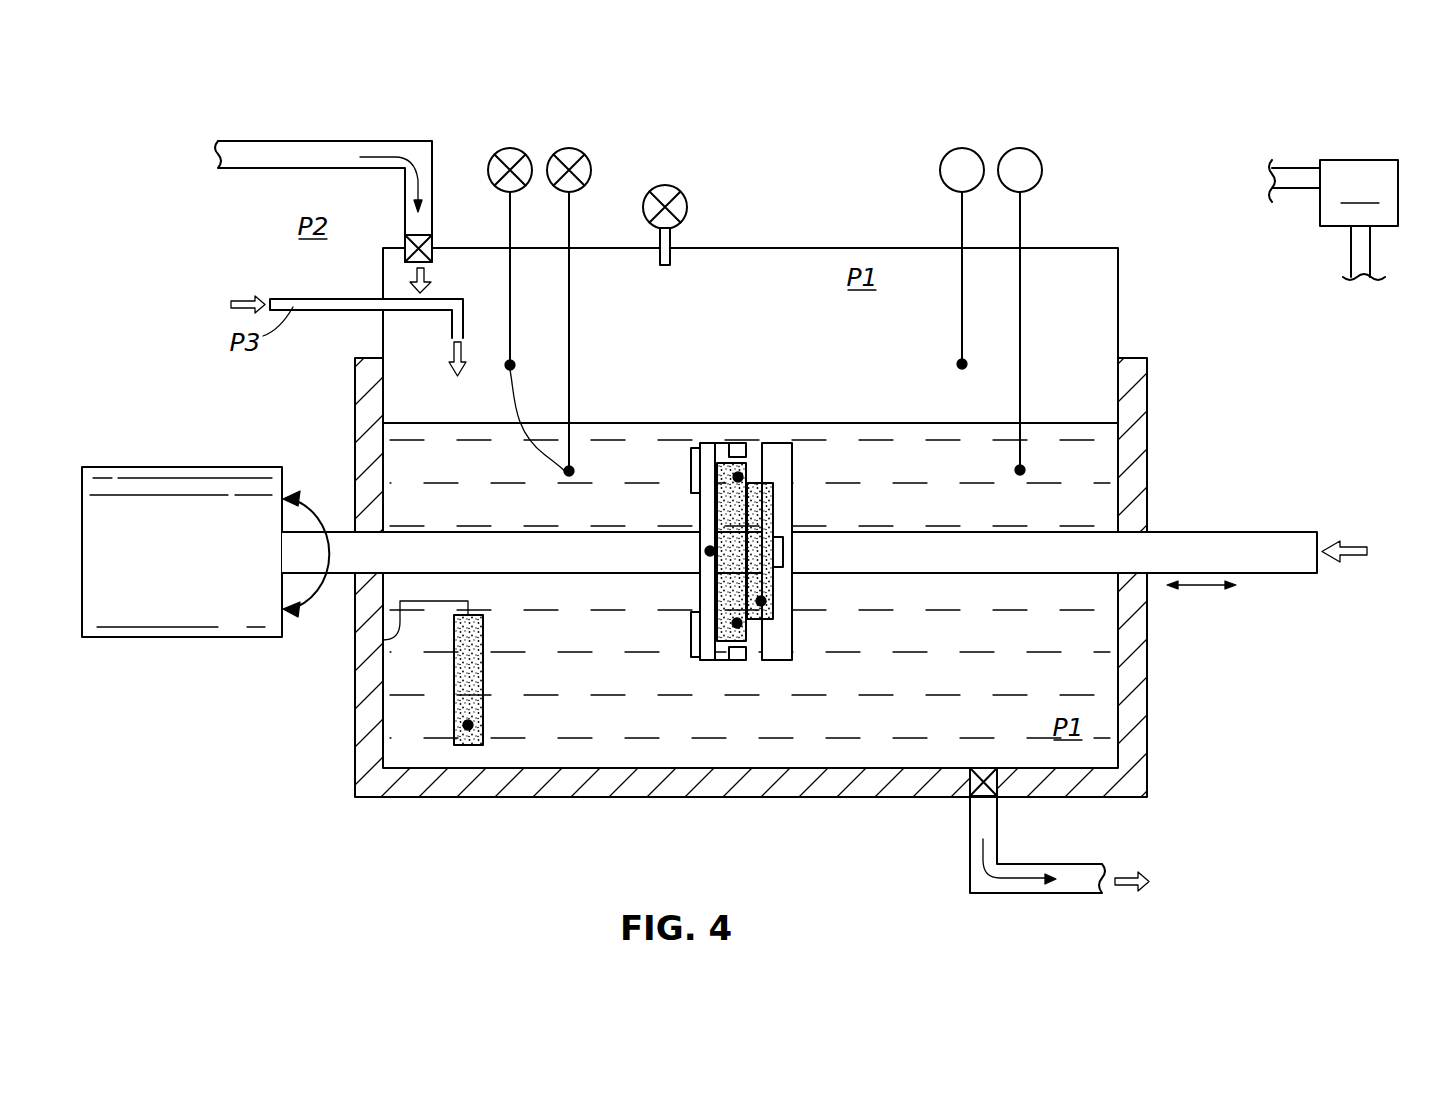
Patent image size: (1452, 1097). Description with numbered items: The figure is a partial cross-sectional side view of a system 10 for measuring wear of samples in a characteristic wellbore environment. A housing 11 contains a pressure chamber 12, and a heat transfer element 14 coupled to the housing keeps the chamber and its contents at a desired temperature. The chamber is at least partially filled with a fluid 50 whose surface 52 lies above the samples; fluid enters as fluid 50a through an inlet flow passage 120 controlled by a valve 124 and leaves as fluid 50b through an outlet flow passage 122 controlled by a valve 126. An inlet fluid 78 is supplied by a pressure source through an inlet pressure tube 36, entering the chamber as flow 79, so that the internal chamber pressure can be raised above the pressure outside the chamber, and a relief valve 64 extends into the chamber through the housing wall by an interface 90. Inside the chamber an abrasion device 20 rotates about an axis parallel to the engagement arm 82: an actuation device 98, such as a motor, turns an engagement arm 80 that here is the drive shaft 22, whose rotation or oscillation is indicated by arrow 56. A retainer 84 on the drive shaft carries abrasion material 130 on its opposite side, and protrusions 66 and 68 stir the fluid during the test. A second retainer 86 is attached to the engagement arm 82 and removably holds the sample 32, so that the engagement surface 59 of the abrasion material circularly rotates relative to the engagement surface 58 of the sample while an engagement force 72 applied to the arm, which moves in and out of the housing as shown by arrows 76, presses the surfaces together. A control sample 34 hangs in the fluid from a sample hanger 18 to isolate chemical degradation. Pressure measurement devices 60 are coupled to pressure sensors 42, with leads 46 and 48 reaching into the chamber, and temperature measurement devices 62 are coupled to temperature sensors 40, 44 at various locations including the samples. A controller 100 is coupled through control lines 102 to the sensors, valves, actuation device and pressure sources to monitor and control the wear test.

The system 10 is at (1192, 102).
The housing 11 is at (1118, 290).
The pressure chamber 12 is at (725, 298).
The heat transfer element 14 is at (372, 744).
The sample hanger 18 is at (385, 643).
The abrasion device 20 is at (826, 635).
The drive shaft 22 is at (347, 537).
The sample 32 is at (757, 577).
The control sample 34 is at (482, 712).
The inlet pressure tube 36 is at (283, 298).
The temperature sensors 40 is at (738, 477).
The pressure sensors 42 is at (787, 552).
The temperature sensor 44 is at (463, 725).
The probe lead 46 is at (569, 287).
The temperature probe lead 48 is at (1018, 271).
The fluid 50 is at (1047, 664).
The fluid entering the chamber 50a is at (395, 157).
The fluid exiting the chamber 50b is at (1008, 884).
The surface of the fluid 52 is at (857, 420).
The rotation direction 56 is at (323, 620).
The engagement surface 58 is at (733, 527).
The engagement surface 59 is at (748, 512).
The pressure measurement devices 60 is at (554, 155).
The temperature measurement devices 62 is at (1015, 148).
The relief valve 64 is at (669, 187).
The protrusion 66 is at (693, 445).
The protrusion 68 is at (738, 443).
The engagement force 72 is at (1358, 562).
The arrows 76 is at (1204, 588).
The inlet fluid 78 is at (240, 297).
The gas outflow into vessel 79 is at (452, 358).
The engagement arm 80 is at (478, 548).
The engagement arm 82 is at (1292, 535).
The retainer 84 is at (715, 660).
The retainer 86 is at (782, 660).
The interface 90 is at (672, 247).
The actuation device 98 is at (182, 467).
The controller 100 is at (1359, 193).
The control lines 102 is at (1302, 185).
The inlet flow passage 120 is at (325, 141).
The outlet flow passage 122 is at (1054, 895).
The valve 124 is at (433, 247).
The valve 126 is at (999, 783).
The abrasion material 130 is at (727, 577).